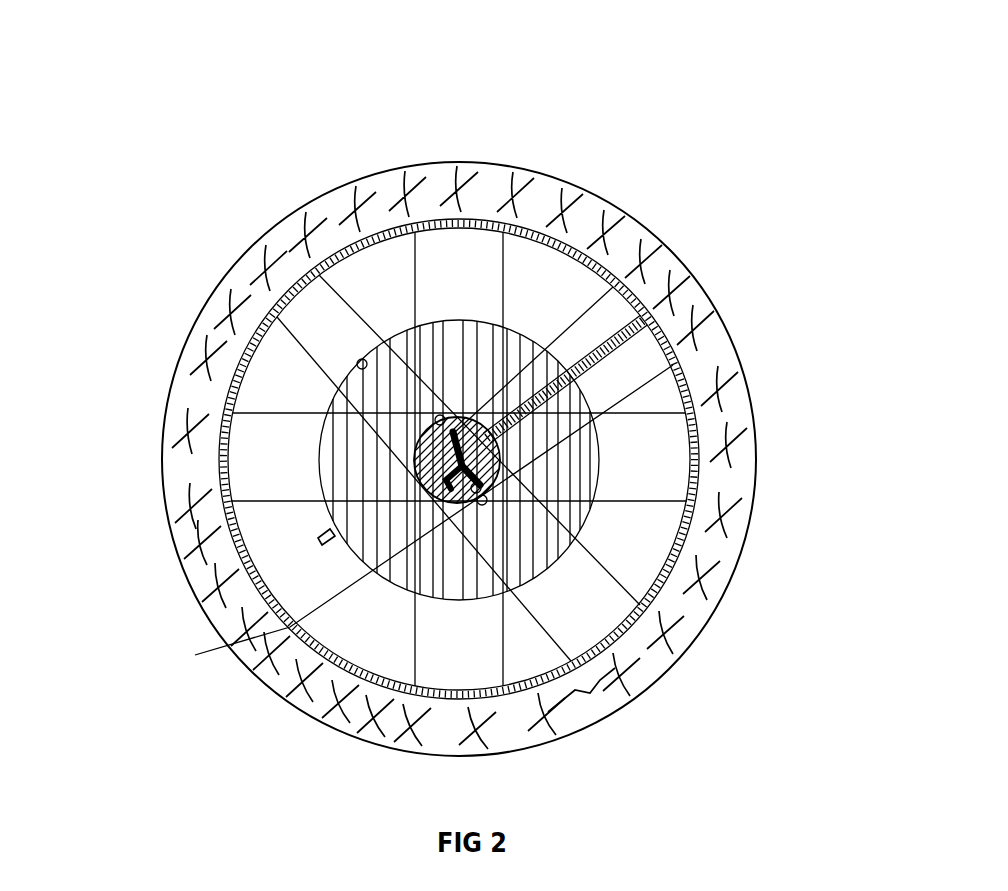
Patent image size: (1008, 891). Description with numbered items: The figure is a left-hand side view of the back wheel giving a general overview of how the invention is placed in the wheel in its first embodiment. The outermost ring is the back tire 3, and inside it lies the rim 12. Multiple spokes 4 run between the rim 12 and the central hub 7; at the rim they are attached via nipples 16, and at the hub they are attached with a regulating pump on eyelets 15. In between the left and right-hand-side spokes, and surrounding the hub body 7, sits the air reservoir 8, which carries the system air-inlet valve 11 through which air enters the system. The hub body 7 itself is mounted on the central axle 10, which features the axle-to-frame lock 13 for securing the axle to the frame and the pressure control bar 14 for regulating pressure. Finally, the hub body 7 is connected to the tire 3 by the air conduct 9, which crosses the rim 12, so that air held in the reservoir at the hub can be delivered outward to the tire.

The tire 3 is at (571, 180).
The spokes 4 is at (612, 569).
The hub 7 is at (483, 505).
The air reservoir 8 is at (356, 356).
The air conduct 9 is at (616, 350).
The central axle 10 is at (442, 464).
The system air-inlet valve 11 is at (318, 548).
The rim 12 is at (463, 216).
The axle-to-frame lock 13 is at (468, 489).
The pressure control bar 14 is at (443, 443).
The regulating pump on eyelets 15 is at (434, 411).
The nipples 16 is at (613, 287).